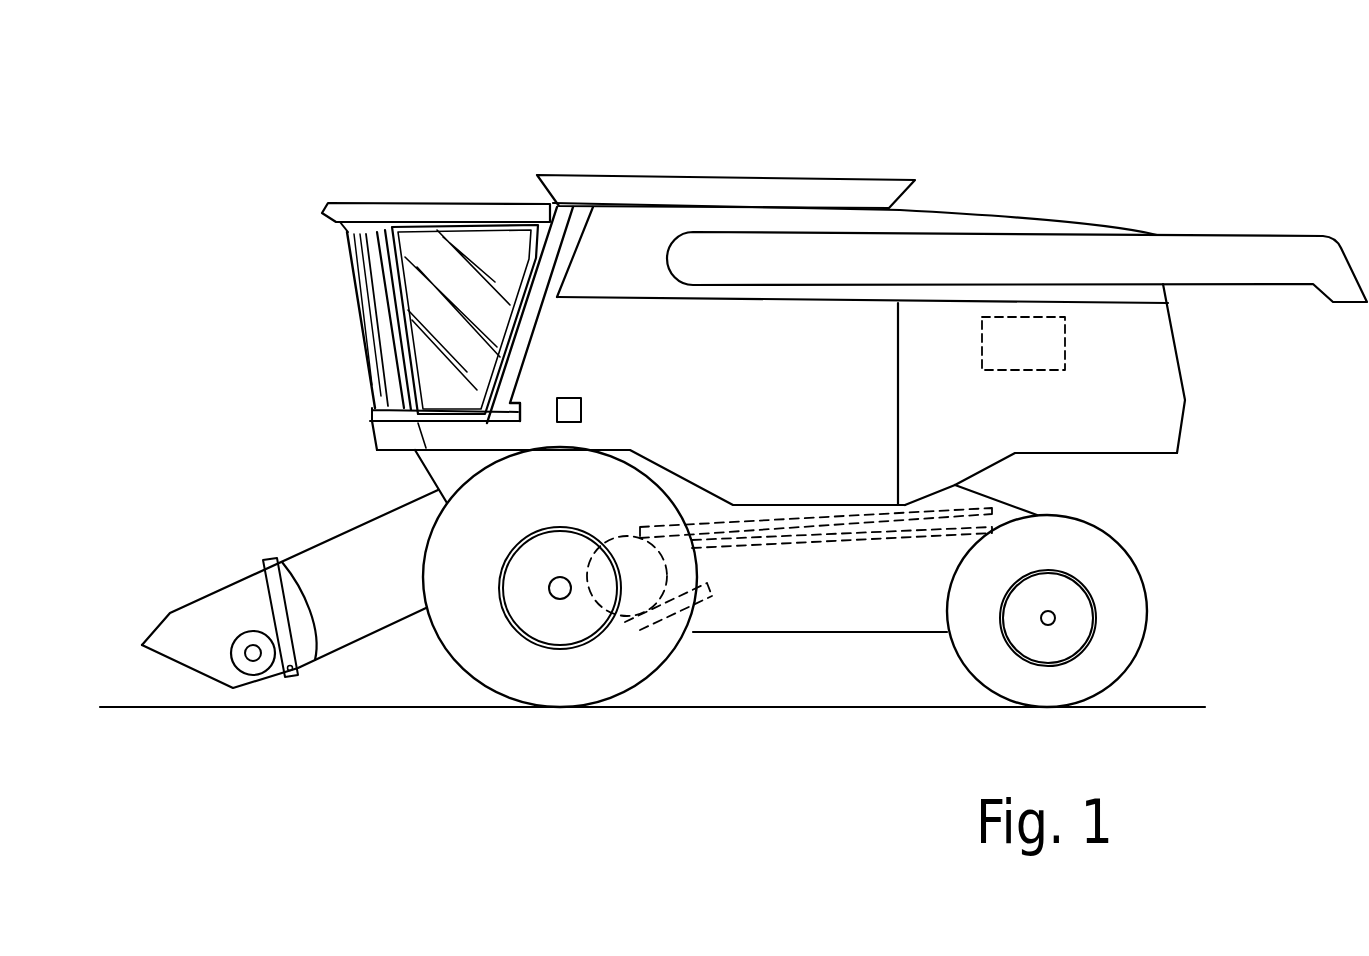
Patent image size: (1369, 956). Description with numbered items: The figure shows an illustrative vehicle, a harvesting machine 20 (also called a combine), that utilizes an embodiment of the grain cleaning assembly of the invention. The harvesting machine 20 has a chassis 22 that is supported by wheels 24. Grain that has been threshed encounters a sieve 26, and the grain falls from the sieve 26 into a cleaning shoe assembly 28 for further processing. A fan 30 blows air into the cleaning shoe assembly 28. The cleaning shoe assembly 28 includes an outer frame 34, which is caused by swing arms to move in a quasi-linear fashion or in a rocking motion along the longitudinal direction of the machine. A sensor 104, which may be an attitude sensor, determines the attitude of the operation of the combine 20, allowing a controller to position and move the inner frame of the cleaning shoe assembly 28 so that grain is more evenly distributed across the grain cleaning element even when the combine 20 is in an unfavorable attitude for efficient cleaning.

The harvesting machine 20 is at (1068, 150).
The chassis 22 is at (1017, 505).
The wheels 24 is at (435, 655).
The sieve 26 is at (880, 512).
The cleaning shoe assembly 28 is at (808, 633).
The fan 30 is at (627, 618).
The outer frame 34 is at (862, 541).
The sensor 104 is at (582, 410).